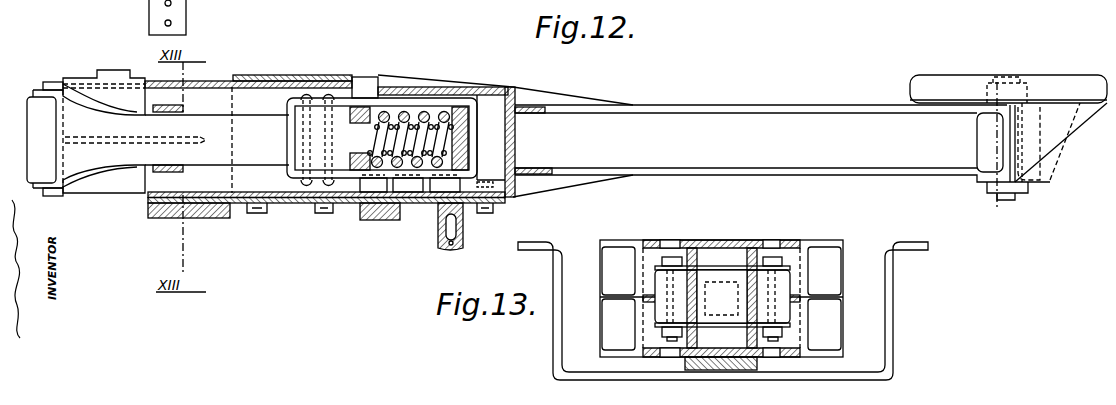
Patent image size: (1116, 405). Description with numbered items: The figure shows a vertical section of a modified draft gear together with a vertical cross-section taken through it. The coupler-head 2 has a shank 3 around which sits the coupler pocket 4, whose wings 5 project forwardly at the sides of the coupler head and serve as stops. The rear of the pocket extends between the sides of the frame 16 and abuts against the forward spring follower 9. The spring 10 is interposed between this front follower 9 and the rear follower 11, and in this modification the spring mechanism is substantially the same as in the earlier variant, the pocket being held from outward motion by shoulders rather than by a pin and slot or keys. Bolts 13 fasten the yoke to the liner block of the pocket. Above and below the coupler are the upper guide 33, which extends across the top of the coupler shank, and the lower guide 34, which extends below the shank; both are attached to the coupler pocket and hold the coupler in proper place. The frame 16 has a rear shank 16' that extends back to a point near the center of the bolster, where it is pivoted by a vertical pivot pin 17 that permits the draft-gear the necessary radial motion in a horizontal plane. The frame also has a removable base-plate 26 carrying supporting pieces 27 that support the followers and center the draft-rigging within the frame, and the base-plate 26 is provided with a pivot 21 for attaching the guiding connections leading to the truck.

In FIG. 12, the coupler-head 2 is at (135, 130).
In FIG. 12, the shank 3 is at (176, 131).
In FIG. 13, the shank 3 is at (722, 296).
In FIG. 12, the coupler pocket 4 is at (215, 82).
In FIG. 13, the coupler pocket 4 is at (727, 237).
In FIG. 12, the wings 5 is at (73, 193).
In FIG. 13, the wings 5 is at (721, 298).
In FIG. 12, the forward spring follower 9 is at (358, 108).
In FIG. 12, the spring 10 is at (404, 118).
In FIG. 12, the rear follower 11 is at (466, 119).
In FIG. 12, the bolts 13 is at (327, 97).
In FIG. 12, the frame 16 is at (492, 130).
In FIG. 12, the rear shank 16' is at (782, 143).
In FIG. 12, the vertical pivot pin 17 is at (1005, 200).
In FIG. 12, the pivot 21 is at (471, 232).
In FIG. 12, the removable base-plate 26 is at (357, 204).
In FIG. 12, the supporting pieces 27 is at (437, 190).
In FIG. 12, the upper guide 33 is at (183, 106).
In FIG. 13, the upper guide 33 is at (721, 295).
In FIG. 12, the lower guide 34 is at (183, 174).
In FIG. 13, the lower guide 34 is at (722, 298).